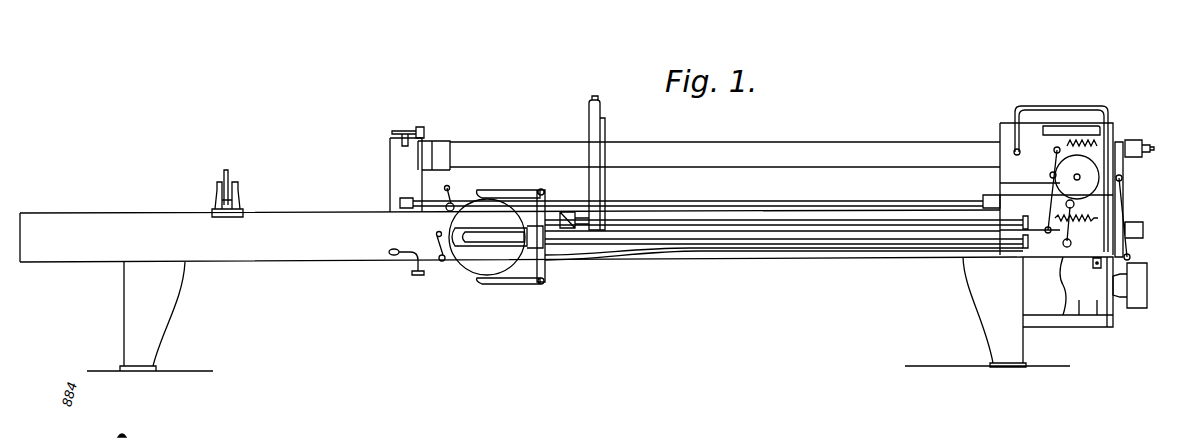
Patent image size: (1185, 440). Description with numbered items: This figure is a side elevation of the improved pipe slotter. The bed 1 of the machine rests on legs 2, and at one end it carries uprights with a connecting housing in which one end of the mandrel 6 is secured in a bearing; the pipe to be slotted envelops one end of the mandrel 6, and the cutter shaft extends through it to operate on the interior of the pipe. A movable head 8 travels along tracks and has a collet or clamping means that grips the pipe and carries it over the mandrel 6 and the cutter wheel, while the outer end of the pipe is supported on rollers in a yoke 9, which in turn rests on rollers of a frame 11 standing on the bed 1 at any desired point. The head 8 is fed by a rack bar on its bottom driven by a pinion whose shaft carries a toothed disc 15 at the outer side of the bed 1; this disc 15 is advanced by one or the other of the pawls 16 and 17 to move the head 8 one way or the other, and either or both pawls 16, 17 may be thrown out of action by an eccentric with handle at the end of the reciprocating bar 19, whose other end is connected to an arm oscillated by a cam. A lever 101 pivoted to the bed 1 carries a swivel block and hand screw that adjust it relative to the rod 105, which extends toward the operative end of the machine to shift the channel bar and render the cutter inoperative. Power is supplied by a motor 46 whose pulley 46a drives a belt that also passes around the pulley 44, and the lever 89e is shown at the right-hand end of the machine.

The bed 1 is at (366, 258).
The legs 2 is at (166, 319).
The mandrel 6 is at (770, 142).
The movable head 8 is at (589, 120).
The yoke 9 is at (229, 176).
The frame 11 is at (243, 201).
The toothed disc 15 is at (472, 264).
The pawl 16 is at (520, 191).
The pawl 17 is at (514, 284).
The reciprocating bar 19 is at (760, 245).
The pulley 44 is at (1136, 158).
The motor 46 is at (1068, 292).
The motor pulley 46a is at (1147, 286).
The lever 89e is at (1132, 254).
The lever 101 is at (411, 252).
The rod 105 is at (871, 252).